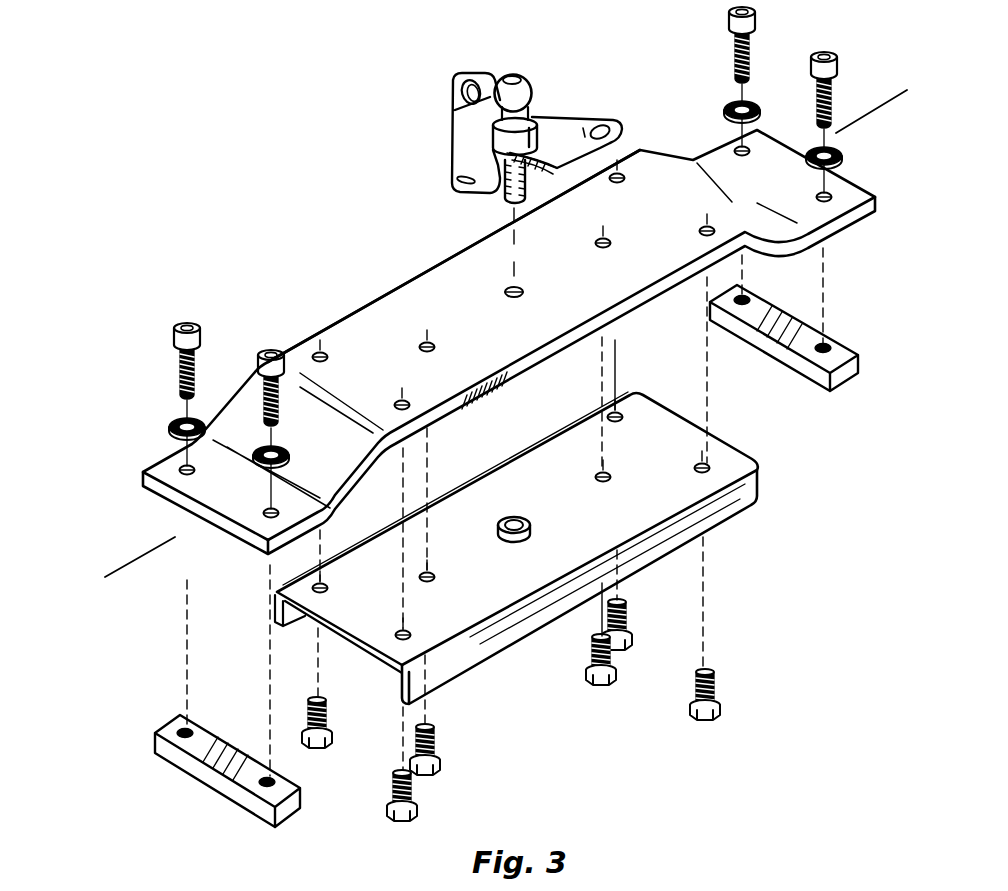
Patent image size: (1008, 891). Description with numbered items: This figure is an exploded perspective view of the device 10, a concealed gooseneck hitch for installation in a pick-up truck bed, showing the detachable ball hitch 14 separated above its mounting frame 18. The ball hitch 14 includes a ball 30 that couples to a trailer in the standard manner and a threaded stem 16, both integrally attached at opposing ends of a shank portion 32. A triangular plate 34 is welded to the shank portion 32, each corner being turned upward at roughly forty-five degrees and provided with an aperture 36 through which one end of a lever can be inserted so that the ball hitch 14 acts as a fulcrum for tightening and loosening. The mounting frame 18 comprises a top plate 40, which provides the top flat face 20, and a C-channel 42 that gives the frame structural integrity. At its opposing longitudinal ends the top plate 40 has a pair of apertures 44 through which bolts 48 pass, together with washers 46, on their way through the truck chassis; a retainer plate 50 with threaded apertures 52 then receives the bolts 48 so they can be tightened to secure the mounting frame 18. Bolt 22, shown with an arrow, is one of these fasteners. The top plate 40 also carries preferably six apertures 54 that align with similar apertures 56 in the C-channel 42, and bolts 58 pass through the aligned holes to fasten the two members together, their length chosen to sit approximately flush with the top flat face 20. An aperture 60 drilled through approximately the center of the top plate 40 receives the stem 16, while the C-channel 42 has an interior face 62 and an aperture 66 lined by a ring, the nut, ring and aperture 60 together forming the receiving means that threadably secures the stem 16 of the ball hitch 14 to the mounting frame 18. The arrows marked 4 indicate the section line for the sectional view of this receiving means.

The device 10 is at (302, 186).
The ball hitch 14 is at (535, 76).
The stem 16 is at (502, 203).
The mounting frame 18 is at (335, 322).
The top flat face 20 is at (465, 312).
The bolt fastener 22 is at (174, 370).
The ball 30 is at (503, 82).
The shank portion 32 is at (543, 120).
The triangular plate 34 is at (466, 127).
The aperture 36 is at (462, 93).
The top plate 40 is at (390, 320).
The C-channel 42 is at (470, 657).
The apertures 44 is at (814, 195).
The washers 46 is at (807, 152).
The bolts 48 is at (750, 60).
The retainer plate 50 is at (806, 330).
The threaded apertures 52 is at (745, 306).
The apertures 54 is at (395, 404).
The apertures 56 is at (398, 633).
The bolts 58 is at (395, 778).
The aperture 60 is at (524, 292).
The interior face 62 is at (566, 503).
The aperture 66 is at (513, 541).
The section line 4- 4 is at (907, 90).